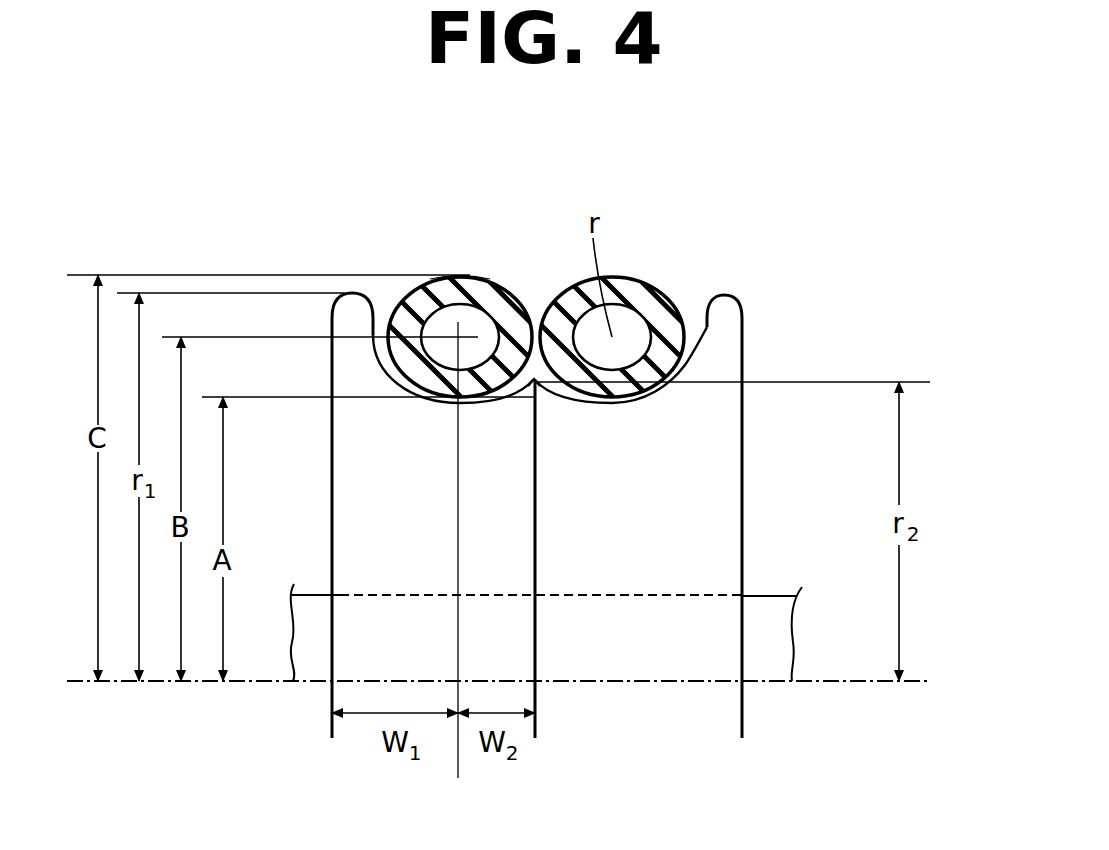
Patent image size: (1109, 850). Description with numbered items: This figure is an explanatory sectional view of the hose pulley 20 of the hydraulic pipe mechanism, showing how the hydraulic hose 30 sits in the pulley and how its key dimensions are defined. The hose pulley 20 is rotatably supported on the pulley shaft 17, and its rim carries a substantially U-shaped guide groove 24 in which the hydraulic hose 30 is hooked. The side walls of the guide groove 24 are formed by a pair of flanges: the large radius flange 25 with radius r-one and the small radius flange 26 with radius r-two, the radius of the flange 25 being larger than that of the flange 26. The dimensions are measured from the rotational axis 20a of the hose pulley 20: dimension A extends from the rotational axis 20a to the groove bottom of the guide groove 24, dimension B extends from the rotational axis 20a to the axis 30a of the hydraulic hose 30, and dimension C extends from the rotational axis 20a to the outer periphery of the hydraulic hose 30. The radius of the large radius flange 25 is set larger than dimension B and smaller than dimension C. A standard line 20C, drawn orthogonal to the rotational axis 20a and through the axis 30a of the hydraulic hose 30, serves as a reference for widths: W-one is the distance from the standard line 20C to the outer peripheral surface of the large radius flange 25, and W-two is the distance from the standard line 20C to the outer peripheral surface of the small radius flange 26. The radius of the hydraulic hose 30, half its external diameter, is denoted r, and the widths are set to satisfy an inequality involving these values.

The pulley shaft 17 is at (773, 617).
The hose pulley 20 is at (328, 495).
The rotational axis 20a is at (530, 681).
The standard line 20C is at (467, 568).
The guide groove 24 is at (385, 356).
The large radius flange 25 is at (357, 298).
The small radius flange 26 is at (536, 296).
The hydraulic hose 30 is at (509, 298).
The axis of the hydraulic hose 30a is at (466, 277).